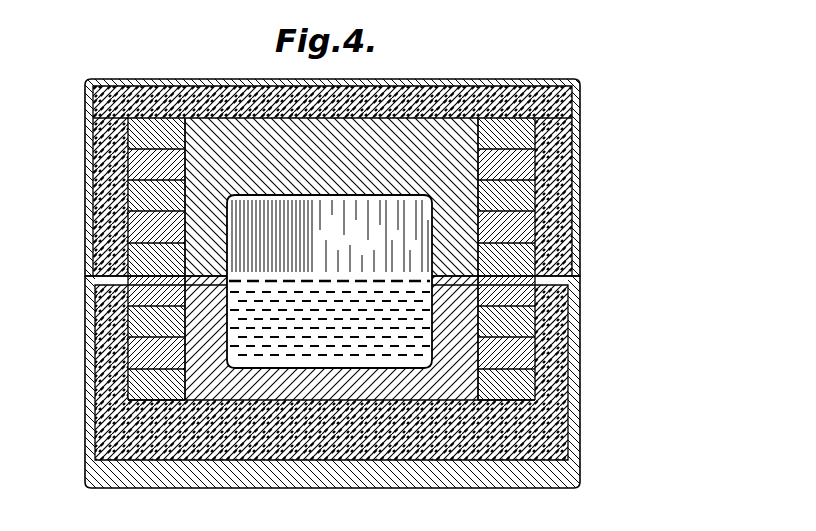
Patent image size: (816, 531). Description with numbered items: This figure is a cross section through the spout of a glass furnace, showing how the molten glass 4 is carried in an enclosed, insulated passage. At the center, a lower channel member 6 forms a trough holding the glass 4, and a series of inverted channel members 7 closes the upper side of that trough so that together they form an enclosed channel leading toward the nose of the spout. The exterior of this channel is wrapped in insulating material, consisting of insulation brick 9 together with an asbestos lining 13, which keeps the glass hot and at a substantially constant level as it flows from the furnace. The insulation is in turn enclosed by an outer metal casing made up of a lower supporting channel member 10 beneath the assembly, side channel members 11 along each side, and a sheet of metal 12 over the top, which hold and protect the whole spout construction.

The glass 4 is at (353, 318).
The lower channel member 6 is at (222, 388).
The inverted channel members 7 is at (212, 145).
The insulation brick 9 is at (125, 268).
The lower supporting channel member 10 is at (87, 370).
The side channel members 11 is at (89, 198).
The sheet of metal 12 is at (437, 86).
The asbestos lining 13 is at (410, 103).